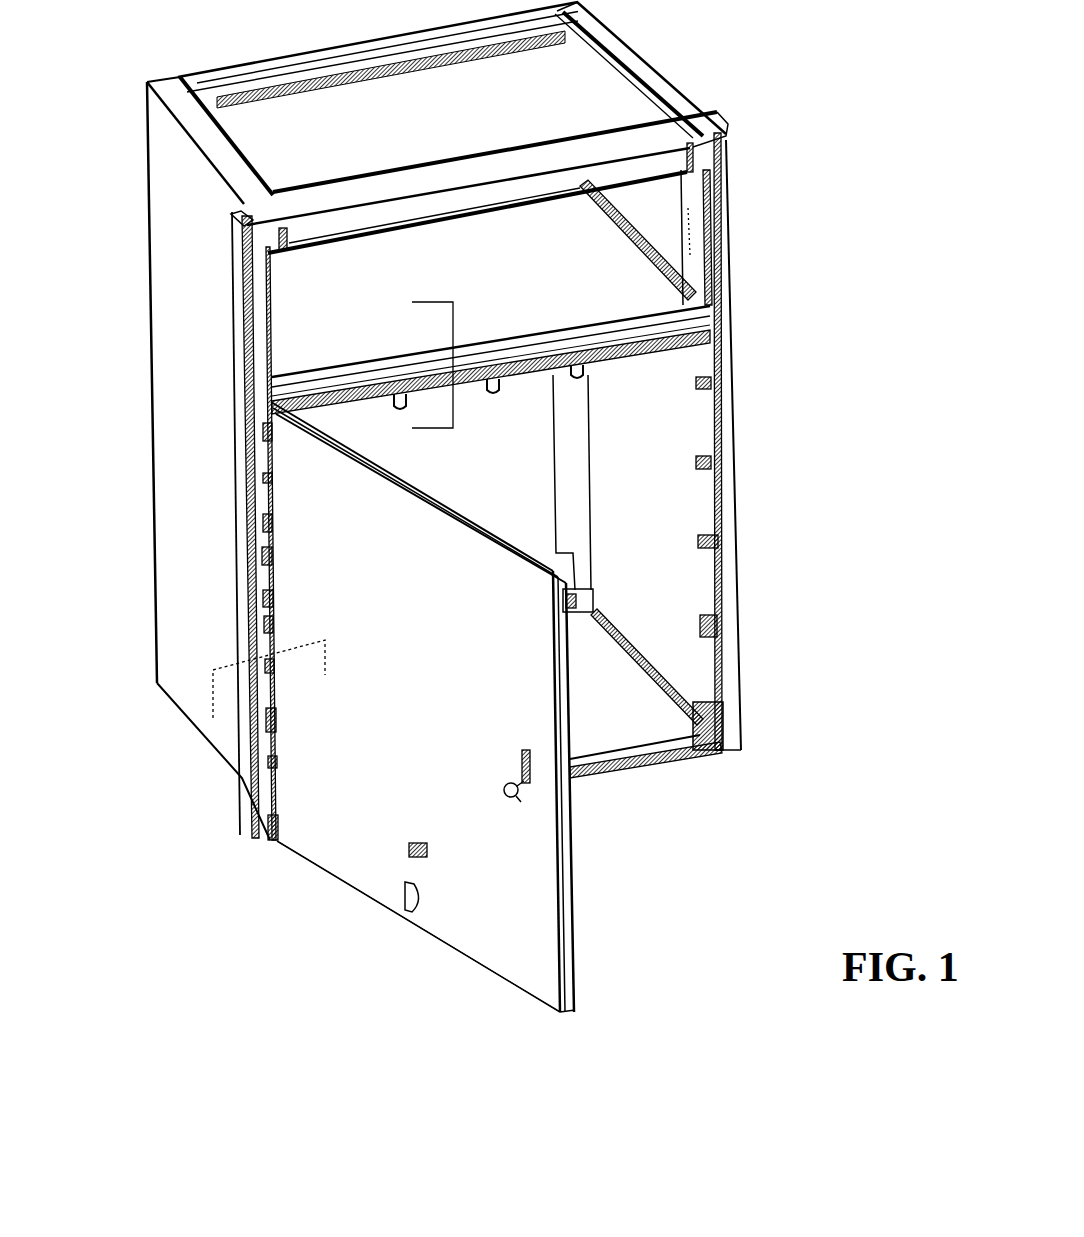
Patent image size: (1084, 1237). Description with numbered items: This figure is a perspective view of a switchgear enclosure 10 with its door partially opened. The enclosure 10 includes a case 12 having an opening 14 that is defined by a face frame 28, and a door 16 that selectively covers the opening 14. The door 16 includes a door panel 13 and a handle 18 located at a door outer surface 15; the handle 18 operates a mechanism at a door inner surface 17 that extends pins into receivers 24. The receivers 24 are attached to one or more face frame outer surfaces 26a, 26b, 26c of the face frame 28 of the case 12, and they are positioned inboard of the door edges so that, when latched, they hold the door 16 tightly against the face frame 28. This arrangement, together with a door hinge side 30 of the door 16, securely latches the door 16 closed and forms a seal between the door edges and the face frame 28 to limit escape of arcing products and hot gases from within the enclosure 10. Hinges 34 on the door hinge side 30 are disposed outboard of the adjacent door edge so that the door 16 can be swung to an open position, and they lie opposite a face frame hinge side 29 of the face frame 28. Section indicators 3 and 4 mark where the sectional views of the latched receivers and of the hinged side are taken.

The switchgear enclosure 10 is at (707, 87).
The case 12 is at (190, 688).
The door panel 13 is at (338, 807).
The opening 14 is at (673, 387).
The door outer surface 15 is at (513, 717).
The door 16 is at (498, 955).
The door inner surface 17 is at (577, 947).
The handle 18 is at (512, 797).
The receivers 24 is at (710, 262).
The face frame outer surface 26a is at (557, 333).
The face frame outer surface 26b is at (723, 533).
The face frame outer surface 26c is at (657, 750).
The face frame 28 is at (725, 455).
The face frame hinge side 29 is at (262, 556).
The door hinge side 30 is at (273, 597).
The hinges 34 is at (267, 843).
The section line 3- 3 is at (416, 368).
The section line 4- 4 is at (276, 694).